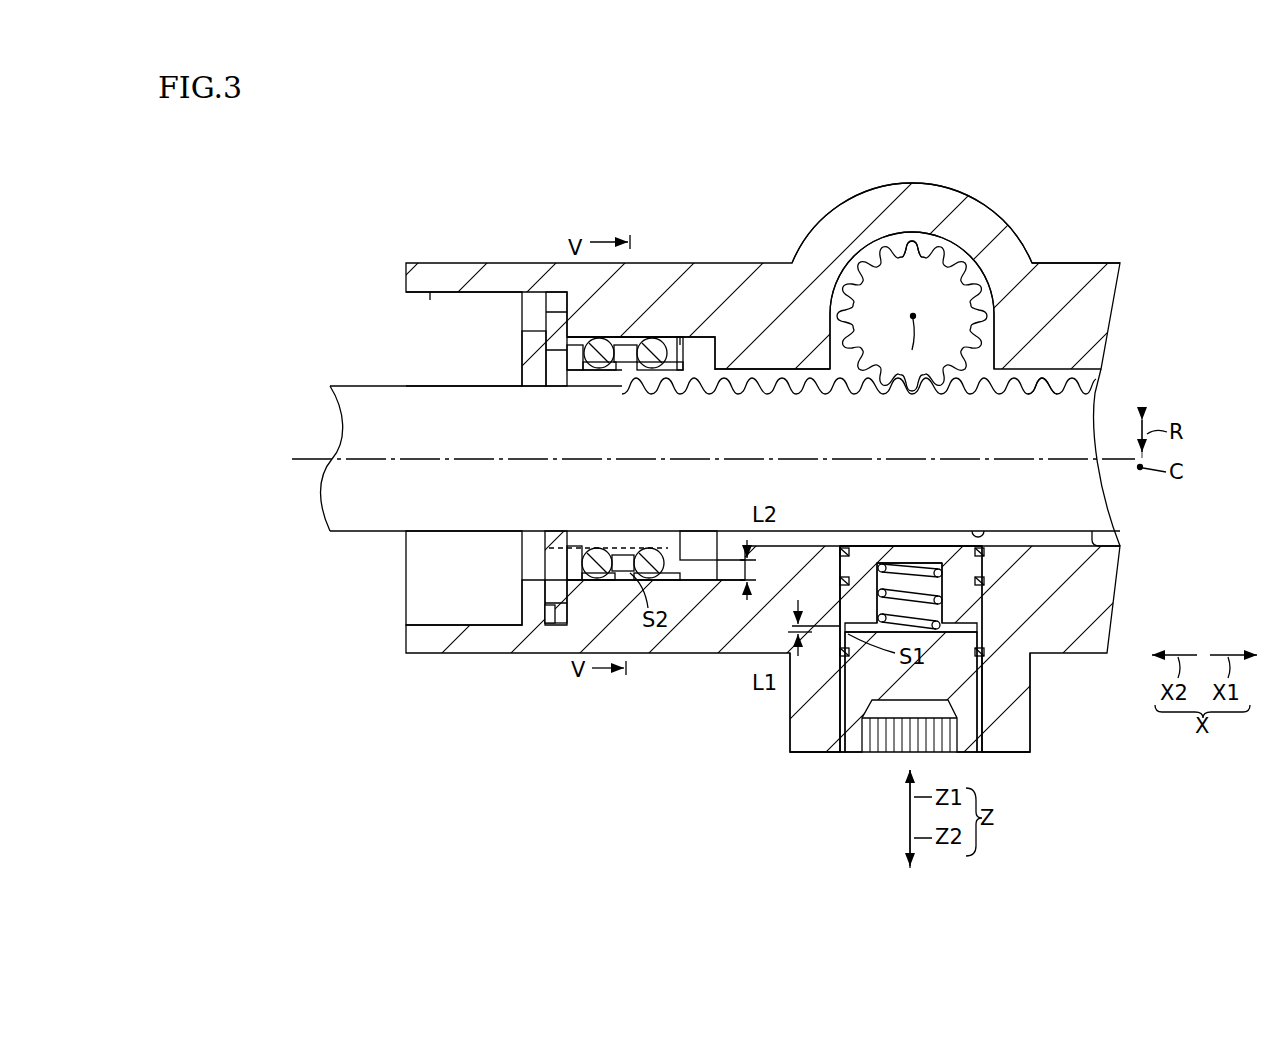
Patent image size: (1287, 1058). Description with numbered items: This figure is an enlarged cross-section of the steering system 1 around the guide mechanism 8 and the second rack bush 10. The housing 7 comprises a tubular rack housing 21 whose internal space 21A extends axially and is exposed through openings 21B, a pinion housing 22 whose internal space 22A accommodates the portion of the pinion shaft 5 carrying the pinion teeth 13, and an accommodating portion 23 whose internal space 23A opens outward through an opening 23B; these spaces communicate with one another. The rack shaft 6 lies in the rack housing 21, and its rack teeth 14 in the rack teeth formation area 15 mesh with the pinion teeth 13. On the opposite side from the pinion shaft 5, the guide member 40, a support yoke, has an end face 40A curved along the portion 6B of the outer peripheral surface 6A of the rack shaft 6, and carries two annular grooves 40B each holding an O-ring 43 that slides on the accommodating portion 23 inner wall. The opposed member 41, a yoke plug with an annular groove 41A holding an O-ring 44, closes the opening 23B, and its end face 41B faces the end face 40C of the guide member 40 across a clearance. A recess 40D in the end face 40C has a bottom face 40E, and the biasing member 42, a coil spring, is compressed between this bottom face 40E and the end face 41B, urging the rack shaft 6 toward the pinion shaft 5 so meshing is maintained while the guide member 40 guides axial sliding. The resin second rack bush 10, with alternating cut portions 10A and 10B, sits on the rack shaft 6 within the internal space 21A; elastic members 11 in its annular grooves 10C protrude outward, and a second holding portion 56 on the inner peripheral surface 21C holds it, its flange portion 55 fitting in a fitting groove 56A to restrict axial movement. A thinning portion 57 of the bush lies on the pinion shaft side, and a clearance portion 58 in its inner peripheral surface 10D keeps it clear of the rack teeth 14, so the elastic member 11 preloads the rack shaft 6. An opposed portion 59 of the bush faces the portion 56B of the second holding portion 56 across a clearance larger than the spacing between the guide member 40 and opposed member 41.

The steering system 1 is at (1039, 208).
The pinion shaft 5 is at (902, 290).
The rack shaft 6 is at (1100, 513).
The outer peripheral surface 6A is at (1106, 538).
The portion 6B is at (980, 531).
The housing 7 is at (763, 649).
The guide mechanism 8 is at (805, 770).
The second rack bush 10 is at (684, 340).
The cut portions 10A is at (626, 337).
The cut portions 10B is at (660, 546).
The annular grooves 10C is at (605, 371).
The inner peripheral surface 10D is at (575, 337).
The elastic member 11 is at (601, 342).
The pinion teeth 13 is at (978, 240).
The rack teeth 14 is at (1078, 380).
The rack teeth formation area 15 is at (1099, 392).
The rack housing 21 is at (1098, 303).
The internal space 21A is at (1012, 362).
The openings 21B is at (430, 297).
The inner peripheral surface 21C is at (770, 372).
The pinion housing 22 is at (921, 195).
The internal space 22A is at (856, 270).
The accommodating portion 23 is at (1020, 740).
The internal space 23A is at (972, 693).
The opening 23B is at (980, 752).
The guide member 40 is at (947, 528).
The end face 40A is at (878, 531).
The annular grooves 40B is at (843, 580).
The end face 40C is at (875, 565).
The recess 40D is at (925, 565).
The bottom face 40E is at (906, 563).
The opposed member 41 is at (854, 760).
The annular groove 41A is at (986, 653).
The end face 41B is at (985, 612).
The biasing member 42 is at (906, 565).
The O-ring 43 is at (985, 582).
The O-ring 44 is at (790, 685).
The flange portion 55 is at (540, 592).
The second holding portion 56 is at (583, 586).
The fitting groove 56A is at (552, 623).
The portion 56B is at (630, 582).
The thinning portion 57 is at (593, 375).
The clearance portion 58 is at (622, 363).
The opposed portion 59 is at (618, 547).